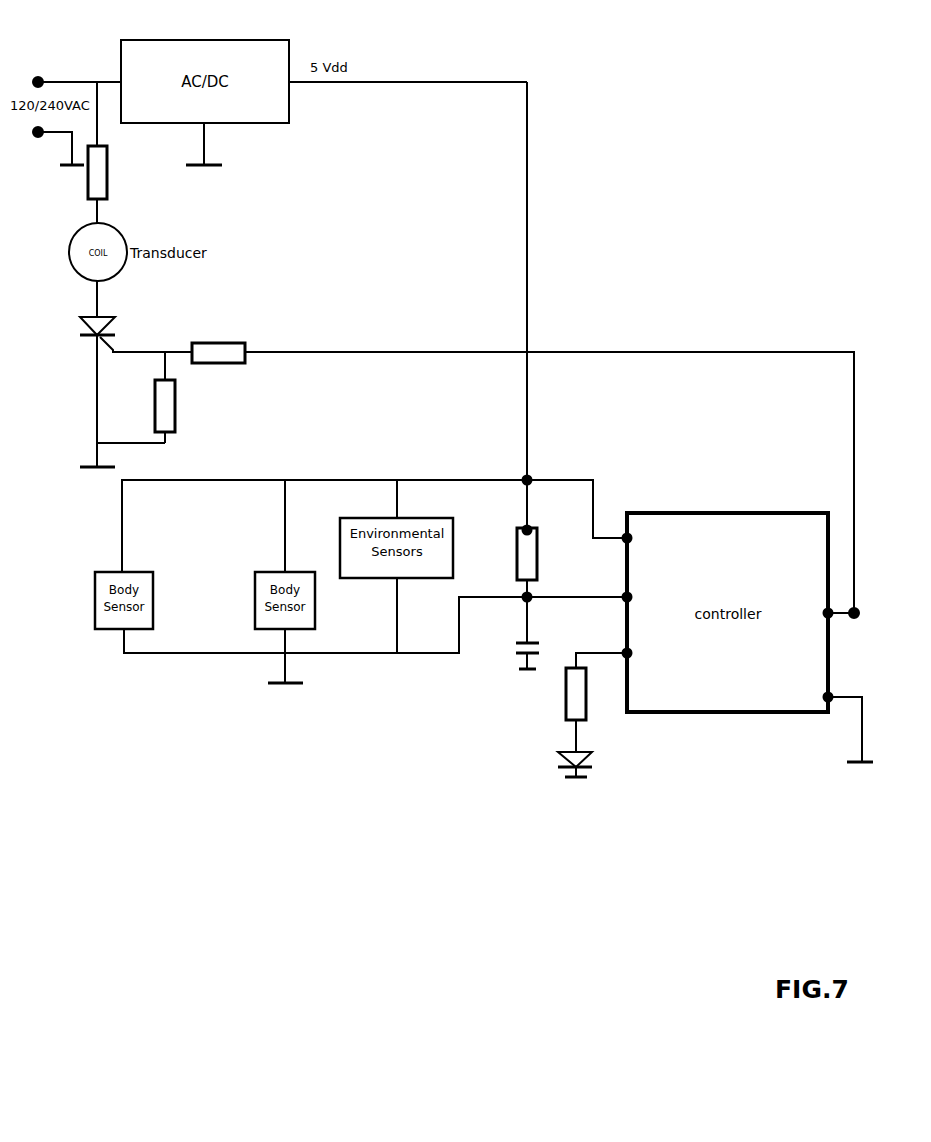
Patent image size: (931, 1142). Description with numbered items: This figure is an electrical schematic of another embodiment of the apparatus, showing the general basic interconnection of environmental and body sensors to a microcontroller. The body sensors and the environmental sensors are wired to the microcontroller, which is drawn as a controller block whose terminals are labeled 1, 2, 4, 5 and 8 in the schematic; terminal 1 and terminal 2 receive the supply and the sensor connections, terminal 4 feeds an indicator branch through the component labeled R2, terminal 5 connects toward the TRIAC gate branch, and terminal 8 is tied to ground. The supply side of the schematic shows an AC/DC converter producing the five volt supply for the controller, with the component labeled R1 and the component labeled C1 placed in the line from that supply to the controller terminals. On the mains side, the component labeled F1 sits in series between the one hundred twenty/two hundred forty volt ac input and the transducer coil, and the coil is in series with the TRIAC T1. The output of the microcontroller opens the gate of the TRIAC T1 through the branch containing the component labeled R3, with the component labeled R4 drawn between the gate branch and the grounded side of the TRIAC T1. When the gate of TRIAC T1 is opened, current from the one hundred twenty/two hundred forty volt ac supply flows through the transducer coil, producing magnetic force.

The fuse F1 is at (109, 152).
The TRIAC T1 is at (122, 316).
The resistor R1 is at (511, 562).
The resistor R2 is at (596, 702).
The resistor R3 is at (512, 471).
The resistor R4 is at (177, 397).
The capacitor C1 is at (516, 633).
The controller pin 1 is at (634, 538).
The controller pin 2 is at (634, 597).
The controller pin 4 is at (634, 653).
The controller pin 5 is at (822, 613).
The controller pin 8 is at (842, 726).